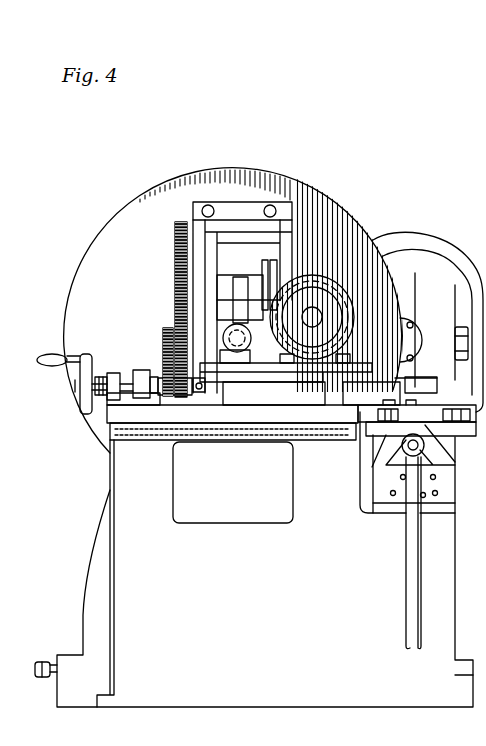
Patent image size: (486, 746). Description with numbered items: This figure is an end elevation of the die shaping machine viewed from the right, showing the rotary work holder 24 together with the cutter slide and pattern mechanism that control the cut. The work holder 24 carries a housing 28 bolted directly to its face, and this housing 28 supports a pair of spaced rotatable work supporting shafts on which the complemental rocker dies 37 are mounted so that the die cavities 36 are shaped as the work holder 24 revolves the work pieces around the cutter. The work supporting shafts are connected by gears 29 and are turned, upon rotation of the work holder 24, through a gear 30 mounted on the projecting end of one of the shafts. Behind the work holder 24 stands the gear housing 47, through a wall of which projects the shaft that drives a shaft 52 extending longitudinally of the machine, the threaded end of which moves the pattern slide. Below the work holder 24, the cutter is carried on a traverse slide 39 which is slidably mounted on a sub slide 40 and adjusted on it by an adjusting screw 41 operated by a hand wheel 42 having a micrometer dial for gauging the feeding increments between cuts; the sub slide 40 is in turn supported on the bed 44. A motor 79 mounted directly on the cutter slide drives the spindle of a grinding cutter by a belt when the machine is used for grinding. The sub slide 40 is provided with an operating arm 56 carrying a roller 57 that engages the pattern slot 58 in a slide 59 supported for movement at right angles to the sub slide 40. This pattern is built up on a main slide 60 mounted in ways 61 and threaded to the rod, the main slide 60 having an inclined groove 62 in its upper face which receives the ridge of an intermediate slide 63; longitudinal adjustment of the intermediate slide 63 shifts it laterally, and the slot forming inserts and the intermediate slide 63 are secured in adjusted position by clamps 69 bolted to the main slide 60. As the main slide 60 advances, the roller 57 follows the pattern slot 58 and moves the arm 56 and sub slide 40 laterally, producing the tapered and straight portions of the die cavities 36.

The rotary work holder 24 is at (328, 224).
The gear housing 47 is at (417, 272).
The housing 28 is at (280, 245).
The die cavity 36 is at (233, 289).
The rocker die 37 is at (220, 299).
The motor 79 is at (324, 317).
The gears 29 is at (176, 257).
The gear 30 is at (165, 342).
The adjusting screw 41 is at (127, 373).
The hand wheel 42 is at (90, 420).
The sub slide 40 is at (130, 412).
The traverse slide 39 is at (167, 402).
The bed 44 is at (267, 442).
The clamps 69 is at (356, 415).
The main slide 60 is at (378, 428).
The slide 59 is at (416, 423).
The ways 61 is at (412, 450).
The pattern slot 58 is at (435, 425).
The intermediate slide 63 is at (405, 480).
The shaft 52 is at (410, 480).
The groove 62 is at (410, 453).
The operating arm 56 is at (398, 345).
The roller 57 is at (405, 378).